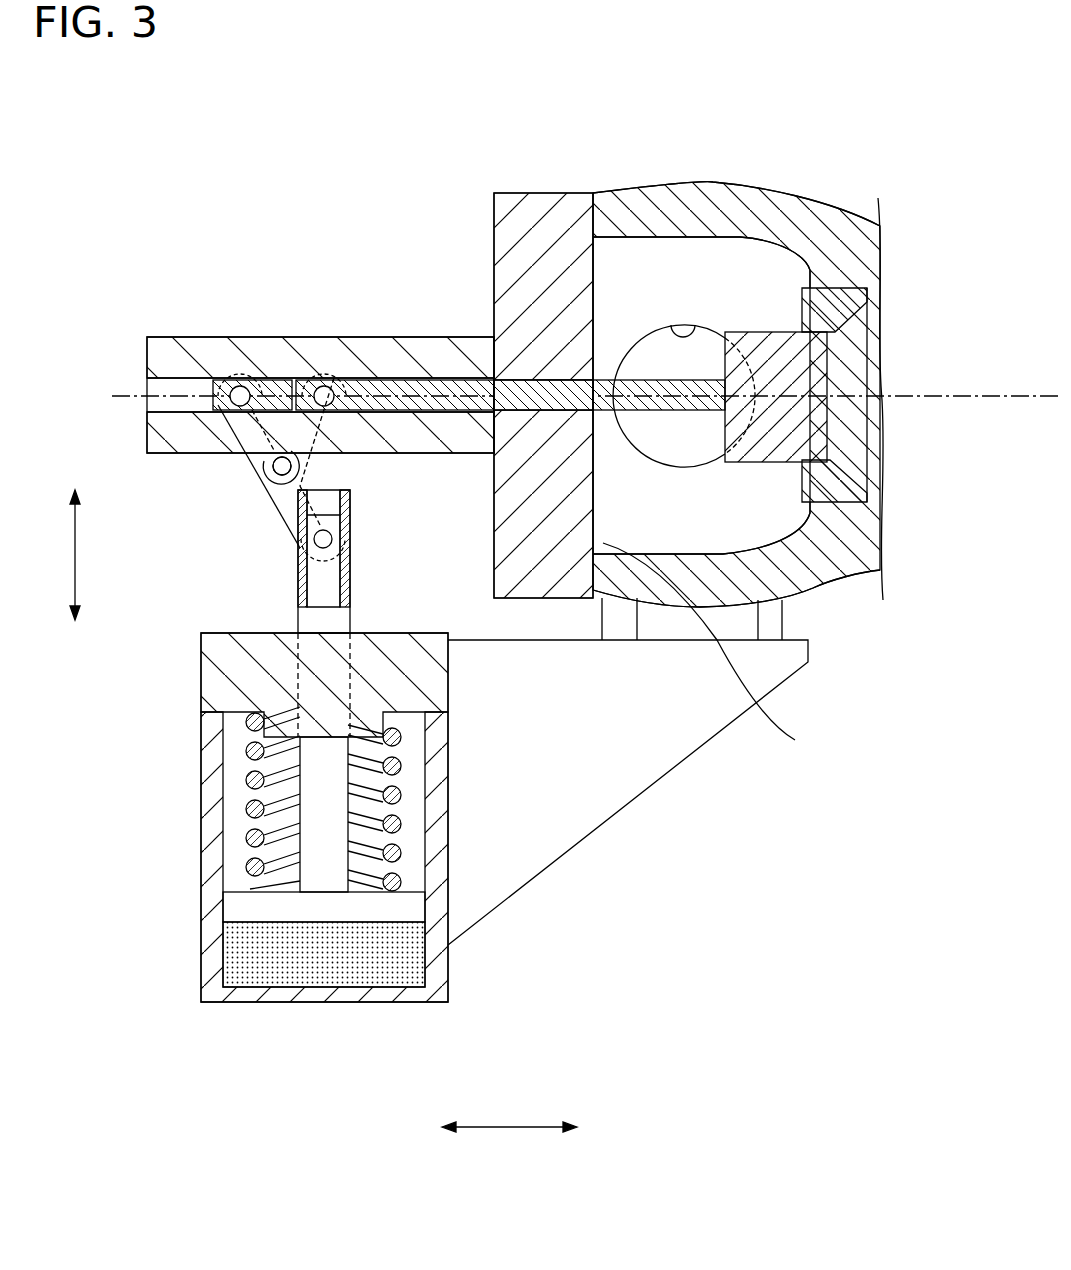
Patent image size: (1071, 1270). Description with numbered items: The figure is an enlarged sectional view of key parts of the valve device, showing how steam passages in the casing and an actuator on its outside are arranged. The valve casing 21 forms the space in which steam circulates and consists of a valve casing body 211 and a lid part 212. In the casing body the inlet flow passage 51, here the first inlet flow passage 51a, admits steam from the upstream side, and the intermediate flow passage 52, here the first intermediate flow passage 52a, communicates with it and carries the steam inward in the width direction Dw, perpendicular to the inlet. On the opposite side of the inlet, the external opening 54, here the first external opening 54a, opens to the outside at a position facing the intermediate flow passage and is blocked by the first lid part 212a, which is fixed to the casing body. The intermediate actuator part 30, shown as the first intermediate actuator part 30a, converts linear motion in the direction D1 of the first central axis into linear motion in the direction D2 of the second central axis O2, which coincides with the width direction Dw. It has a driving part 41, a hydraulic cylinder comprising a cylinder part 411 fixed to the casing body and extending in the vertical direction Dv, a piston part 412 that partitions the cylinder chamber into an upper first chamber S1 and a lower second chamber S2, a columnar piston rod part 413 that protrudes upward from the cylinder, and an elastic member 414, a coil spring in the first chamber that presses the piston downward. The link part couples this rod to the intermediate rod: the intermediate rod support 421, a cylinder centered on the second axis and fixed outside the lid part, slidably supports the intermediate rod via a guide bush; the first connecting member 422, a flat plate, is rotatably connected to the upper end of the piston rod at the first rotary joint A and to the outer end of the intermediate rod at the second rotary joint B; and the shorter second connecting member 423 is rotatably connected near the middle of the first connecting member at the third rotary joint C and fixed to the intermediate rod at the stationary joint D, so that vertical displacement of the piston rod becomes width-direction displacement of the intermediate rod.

The valve casing 21 is at (719, 358).
The valve casing body 211 is at (866, 232).
The lid part 212 is at (575, 353).
The first lid part 212a is at (553, 193).
The intermediate rod support 421 is at (328, 345).
The first connecting member 422 is at (270, 520).
The second connecting member 423 is at (300, 460).
The inlet flow passage 51 is at (692, 270).
The first inlet flow passage 51a is at (684, 336).
The intermediate flow passage 52 is at (835, 395).
The first intermediate flow passage 52a is at (848, 340).
The external opening 54 is at (747, 648).
The first external opening 54a is at (747, 648).
The intermediate actuator part 30 is at (631, 792).
The first intermediate actuator part 30a is at (645, 853).
The driving part 41 is at (321, 787).
The cylinder part 411 is at (437, 993).
The piston part 412 is at (238, 908).
The piston rod part 413 is at (330, 620).
The elastic member 414 is at (249, 799).
The first chamber S1 is at (245, 757).
The second chamber S2 is at (248, 985).
The first rotary joint A is at (332, 542).
The second rotary joint B is at (240, 384).
The third rotary joint C is at (268, 470).
The stationary joint D is at (340, 380).
The second central axis O2 is at (112, 396).
The vertical direction Dv is at (77, 555).
The direction of the first central axis D1 is at (77, 555).
The width direction Dw is at (509, 1113).
The direction of the second central axis D2 is at (509, 1113).